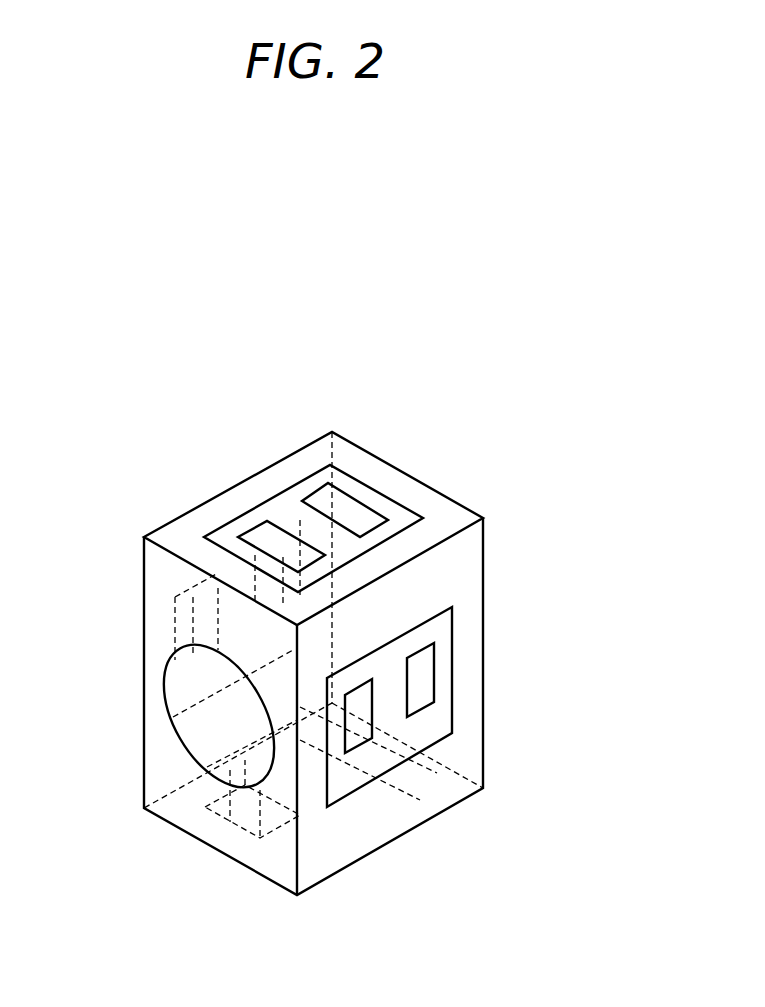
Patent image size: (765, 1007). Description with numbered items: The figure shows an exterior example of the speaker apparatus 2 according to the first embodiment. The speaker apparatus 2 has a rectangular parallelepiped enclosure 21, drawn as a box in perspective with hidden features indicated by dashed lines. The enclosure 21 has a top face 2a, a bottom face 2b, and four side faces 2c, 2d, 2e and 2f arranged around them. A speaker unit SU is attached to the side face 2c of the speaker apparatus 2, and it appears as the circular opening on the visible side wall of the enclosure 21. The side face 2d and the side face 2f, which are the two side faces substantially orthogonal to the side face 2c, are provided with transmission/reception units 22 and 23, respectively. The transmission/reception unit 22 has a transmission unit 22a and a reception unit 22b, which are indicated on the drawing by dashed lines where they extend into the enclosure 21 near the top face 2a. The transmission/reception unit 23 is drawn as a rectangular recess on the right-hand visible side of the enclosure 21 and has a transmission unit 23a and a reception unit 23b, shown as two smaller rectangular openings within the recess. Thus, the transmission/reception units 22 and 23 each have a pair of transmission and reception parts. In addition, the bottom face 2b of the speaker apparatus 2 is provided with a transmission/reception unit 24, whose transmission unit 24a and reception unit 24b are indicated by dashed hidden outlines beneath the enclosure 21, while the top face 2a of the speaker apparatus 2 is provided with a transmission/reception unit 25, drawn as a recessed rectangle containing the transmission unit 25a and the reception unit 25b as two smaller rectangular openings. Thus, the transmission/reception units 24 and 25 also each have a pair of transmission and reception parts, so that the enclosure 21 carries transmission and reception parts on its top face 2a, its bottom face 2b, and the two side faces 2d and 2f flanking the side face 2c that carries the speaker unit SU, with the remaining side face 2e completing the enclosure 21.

The speaker apparatus 2 is at (330, 225).
The enclosure 21 is at (483, 568).
The top face 2a is at (345, 460).
The bottom face 2b is at (455, 790).
The side face 2c is at (160, 815).
The side face 2d is at (157, 628).
The side face 2e is at (470, 660).
The side face 2f is at (334, 868).
The transmission/reception unit 22 is at (175, 597).
The transmission unit 22a is at (195, 604).
The reception unit 22b is at (268, 562).
The transmission/reception unit 23 is at (452, 615).
The transmission unit 23a is at (366, 742).
The reception unit 23b is at (430, 706).
The transmission/reception unit 24 is at (220, 822).
The transmission unit 24a is at (205, 790).
The reception unit 24b is at (392, 820).
The transmission/reception unit 25 is at (310, 472).
The transmission unit 25a is at (340, 567).
The reception unit 25b is at (370, 505).
The speaker unit SU is at (252, 787).